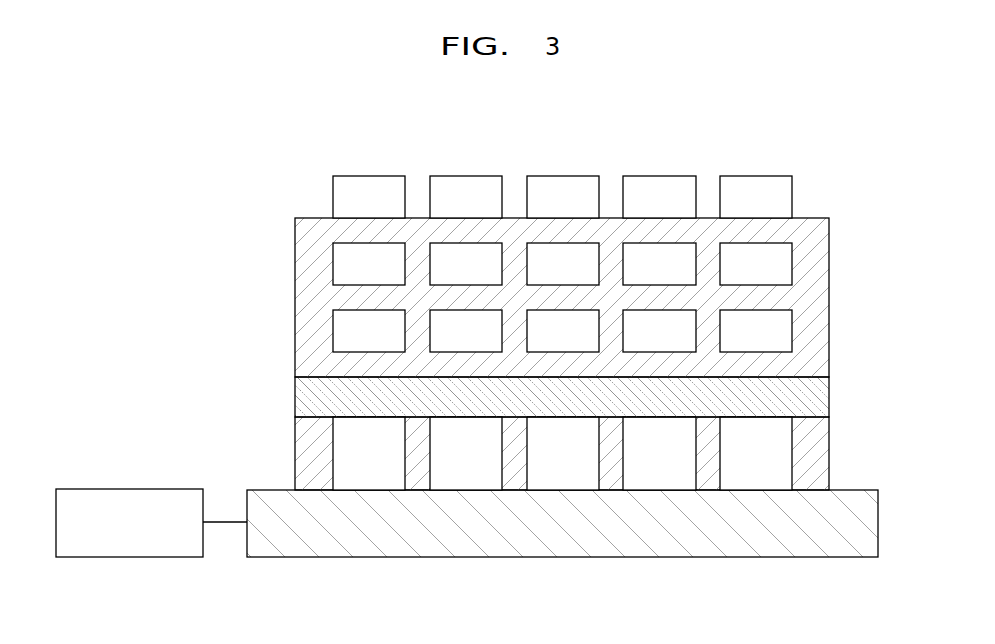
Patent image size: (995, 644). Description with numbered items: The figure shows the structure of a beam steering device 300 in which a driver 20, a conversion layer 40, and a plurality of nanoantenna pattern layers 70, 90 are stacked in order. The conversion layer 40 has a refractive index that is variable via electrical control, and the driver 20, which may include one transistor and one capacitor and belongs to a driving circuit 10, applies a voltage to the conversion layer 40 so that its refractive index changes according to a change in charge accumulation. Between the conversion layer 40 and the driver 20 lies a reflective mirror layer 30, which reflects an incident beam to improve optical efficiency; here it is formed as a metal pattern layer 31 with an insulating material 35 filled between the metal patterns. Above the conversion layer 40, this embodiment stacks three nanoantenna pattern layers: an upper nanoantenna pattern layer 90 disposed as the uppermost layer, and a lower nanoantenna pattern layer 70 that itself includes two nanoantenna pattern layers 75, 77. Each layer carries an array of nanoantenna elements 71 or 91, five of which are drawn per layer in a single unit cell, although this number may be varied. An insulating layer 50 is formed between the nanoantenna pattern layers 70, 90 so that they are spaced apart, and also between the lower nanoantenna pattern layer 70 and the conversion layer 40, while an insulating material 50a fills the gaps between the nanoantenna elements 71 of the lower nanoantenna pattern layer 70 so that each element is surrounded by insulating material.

The beam steering device 300 is at (178, 166).
The driving circuit 10 is at (128, 487).
The driver 20 is at (870, 525).
The reflective mirror layer 30 is at (567, 453).
The metal pattern layer 31 is at (780, 439).
The insulating material 35 is at (820, 470).
The conversion layer 40 is at (820, 400).
The insulating layer 50 is at (753, 230).
The insulating material 50a is at (707, 262).
The lower nanoantenna pattern layer 70 is at (482, 231).
The nanoantenna element 71 is at (468, 250).
The nanoantenna pattern layer 75 is at (316, 331).
The nanoantenna pattern layer 77 is at (316, 263).
The upper nanoantenna pattern layer 90 is at (316, 196).
The nanoantenna element 91 is at (370, 185).